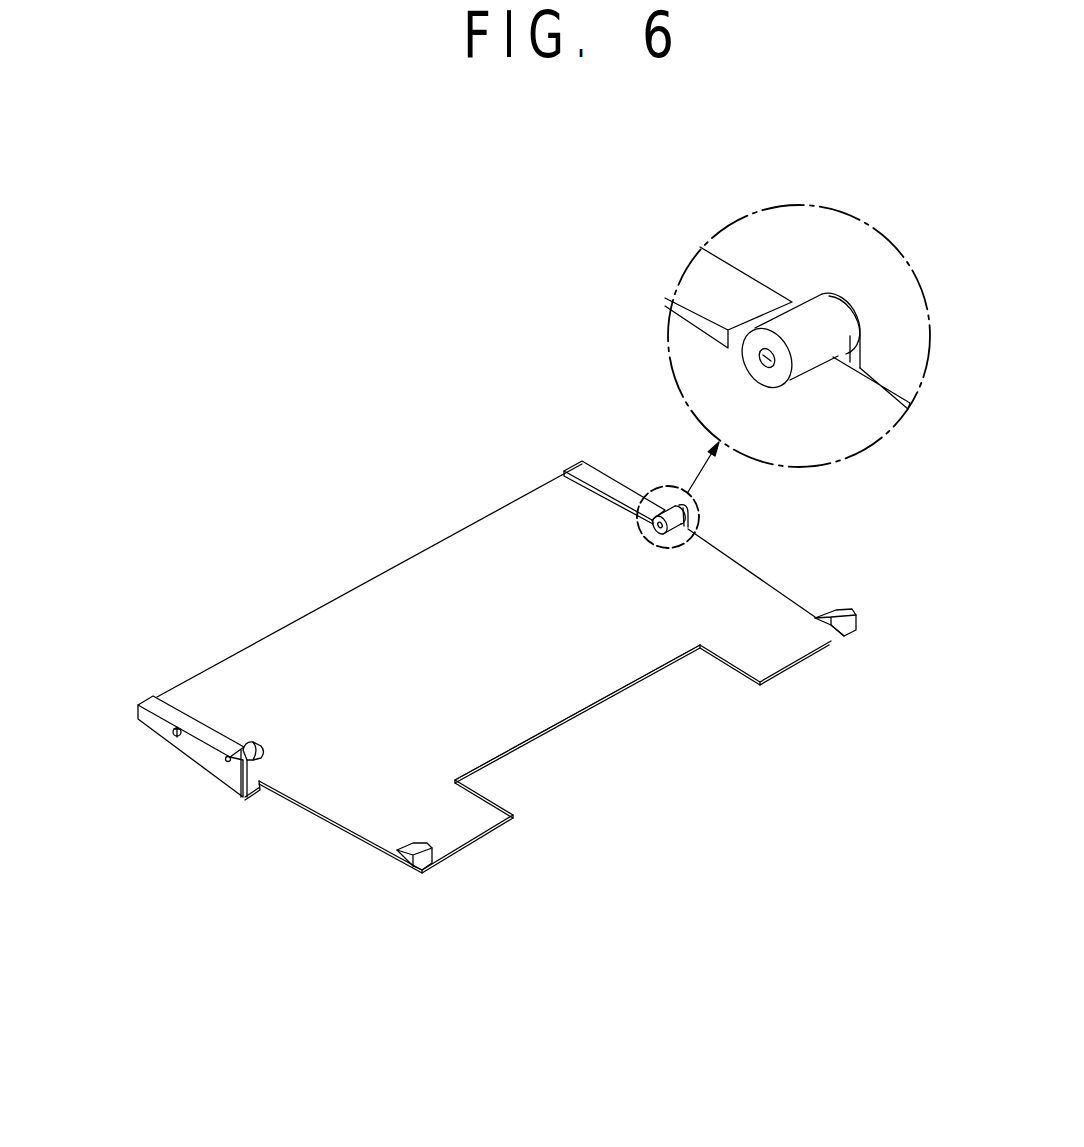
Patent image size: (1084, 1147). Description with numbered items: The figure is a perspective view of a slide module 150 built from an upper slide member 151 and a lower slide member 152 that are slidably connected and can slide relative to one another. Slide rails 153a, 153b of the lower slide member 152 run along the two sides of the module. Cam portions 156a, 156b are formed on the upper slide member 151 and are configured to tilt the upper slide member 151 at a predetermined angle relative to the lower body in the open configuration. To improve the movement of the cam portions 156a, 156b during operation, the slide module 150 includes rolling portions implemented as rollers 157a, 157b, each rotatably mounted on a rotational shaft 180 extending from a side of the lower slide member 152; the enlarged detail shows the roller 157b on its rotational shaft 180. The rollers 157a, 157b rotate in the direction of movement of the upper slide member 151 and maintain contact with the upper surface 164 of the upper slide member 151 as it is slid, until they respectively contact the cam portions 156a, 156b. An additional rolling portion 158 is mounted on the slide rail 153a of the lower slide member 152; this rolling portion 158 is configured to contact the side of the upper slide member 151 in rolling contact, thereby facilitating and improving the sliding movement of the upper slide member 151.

The slide module 150 is at (316, 452).
The upper slide member 151 is at (472, 506).
The lower slide member 152 is at (258, 790).
The slide rail 153a is at (183, 717).
The slide rail 153b is at (610, 483).
The cam portion 156a is at (412, 862).
The cam portion 156b is at (832, 625).
The roller 157a is at (250, 748).
The roller 157b is at (803, 313).
The rolling portion 158 is at (172, 731).
The upper surface 164 is at (550, 688).
The rotational shaft 180 is at (763, 350).